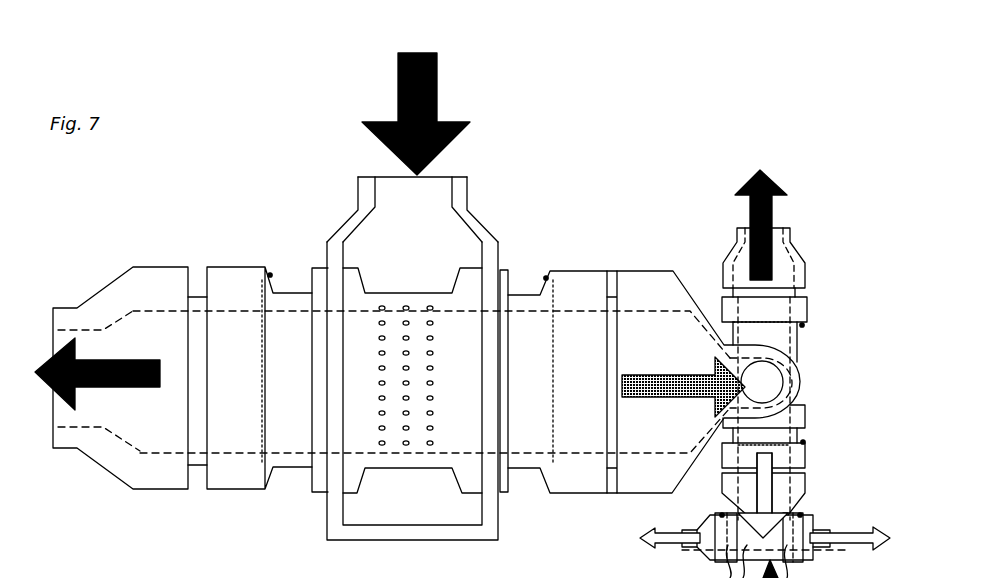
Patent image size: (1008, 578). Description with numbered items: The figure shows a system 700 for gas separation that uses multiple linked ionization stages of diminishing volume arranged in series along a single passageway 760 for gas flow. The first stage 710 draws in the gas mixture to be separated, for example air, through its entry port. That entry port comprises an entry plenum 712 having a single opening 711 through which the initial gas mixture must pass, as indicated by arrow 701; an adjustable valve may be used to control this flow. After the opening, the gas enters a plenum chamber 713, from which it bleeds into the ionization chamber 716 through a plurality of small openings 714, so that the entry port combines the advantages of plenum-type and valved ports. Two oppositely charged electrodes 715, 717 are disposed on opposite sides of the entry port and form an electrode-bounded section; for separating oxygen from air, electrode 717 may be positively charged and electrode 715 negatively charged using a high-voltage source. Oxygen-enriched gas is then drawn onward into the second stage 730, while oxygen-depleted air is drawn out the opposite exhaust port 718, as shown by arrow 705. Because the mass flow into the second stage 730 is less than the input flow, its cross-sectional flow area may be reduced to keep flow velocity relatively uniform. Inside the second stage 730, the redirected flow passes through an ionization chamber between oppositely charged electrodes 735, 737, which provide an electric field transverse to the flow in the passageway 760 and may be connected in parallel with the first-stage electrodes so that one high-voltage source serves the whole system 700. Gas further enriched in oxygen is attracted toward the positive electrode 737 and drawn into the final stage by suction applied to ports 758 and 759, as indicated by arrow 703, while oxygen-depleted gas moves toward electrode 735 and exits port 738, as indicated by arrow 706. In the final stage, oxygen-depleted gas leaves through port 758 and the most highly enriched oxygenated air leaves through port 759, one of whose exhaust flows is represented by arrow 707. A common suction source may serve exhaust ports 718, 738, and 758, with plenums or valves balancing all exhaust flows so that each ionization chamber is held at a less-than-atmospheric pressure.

The system for gas separation 700 is at (250, 213).
The arrow 701 is at (438, 72).
The arrow 703 is at (763, 500).
The arrow 705 is at (100, 362).
The arrow 706 is at (760, 172).
The arrow 707 is at (848, 541).
The first stage 710 is at (663, 270).
The single opening 711 is at (442, 177).
The entry plenum 712 is at (486, 223).
The plenum chamber 713 is at (362, 507).
The small openings 714 is at (433, 297).
The electrode 715 is at (261, 430).
The ionization chamber 716 is at (522, 432).
The electrode 717 is at (555, 331).
The exhaust port 718 is at (53, 420).
The second stage 730 is at (795, 247).
The electrode 735 is at (767, 322).
The electrode 737 is at (763, 440).
The exhaust port 738 is at (745, 223).
The exhaust port 758 is at (846, 532).
The exhaust port 759 is at (688, 540).
The passageway 760 is at (780, 458).